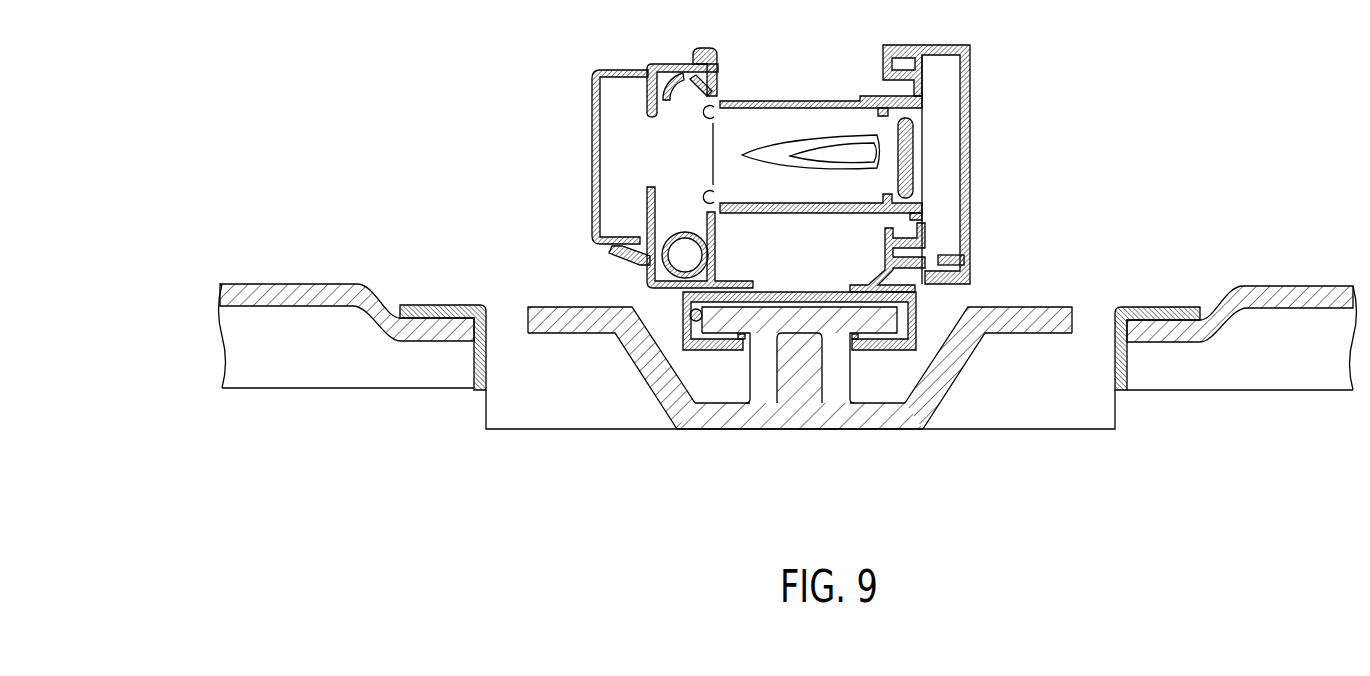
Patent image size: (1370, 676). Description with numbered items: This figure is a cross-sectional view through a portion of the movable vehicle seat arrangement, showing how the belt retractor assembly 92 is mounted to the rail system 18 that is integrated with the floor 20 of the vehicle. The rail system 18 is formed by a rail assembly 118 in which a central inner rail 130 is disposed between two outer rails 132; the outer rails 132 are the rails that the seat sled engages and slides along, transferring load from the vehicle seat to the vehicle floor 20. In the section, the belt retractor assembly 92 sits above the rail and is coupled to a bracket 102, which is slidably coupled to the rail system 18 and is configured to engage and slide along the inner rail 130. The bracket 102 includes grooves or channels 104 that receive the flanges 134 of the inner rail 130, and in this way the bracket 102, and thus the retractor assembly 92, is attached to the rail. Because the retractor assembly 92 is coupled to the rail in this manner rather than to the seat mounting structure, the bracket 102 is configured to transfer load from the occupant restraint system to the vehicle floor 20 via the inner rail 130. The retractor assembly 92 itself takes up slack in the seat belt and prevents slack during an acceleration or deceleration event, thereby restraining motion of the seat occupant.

The rail system 18 is at (834, 443).
The floor 20 is at (1210, 392).
The belt retractor assembly 92 is at (977, 97).
The bracket 102 is at (917, 312).
The grooves or channels 104 is at (690, 316).
The rail assembly 118 is at (700, 420).
The inner rail 130 is at (805, 318).
The outer rails 132 is at (650, 393).
The flanges 134 is at (720, 318).